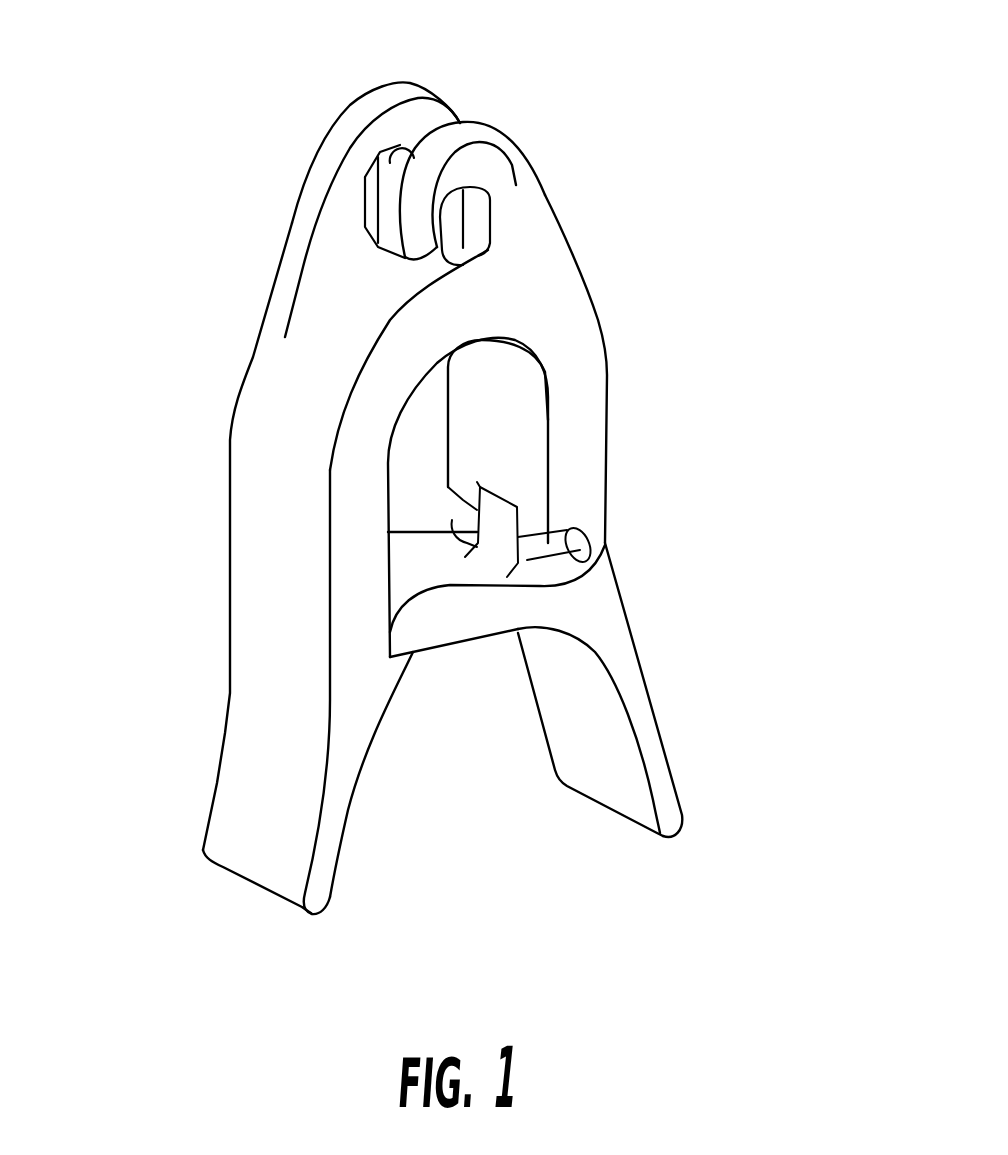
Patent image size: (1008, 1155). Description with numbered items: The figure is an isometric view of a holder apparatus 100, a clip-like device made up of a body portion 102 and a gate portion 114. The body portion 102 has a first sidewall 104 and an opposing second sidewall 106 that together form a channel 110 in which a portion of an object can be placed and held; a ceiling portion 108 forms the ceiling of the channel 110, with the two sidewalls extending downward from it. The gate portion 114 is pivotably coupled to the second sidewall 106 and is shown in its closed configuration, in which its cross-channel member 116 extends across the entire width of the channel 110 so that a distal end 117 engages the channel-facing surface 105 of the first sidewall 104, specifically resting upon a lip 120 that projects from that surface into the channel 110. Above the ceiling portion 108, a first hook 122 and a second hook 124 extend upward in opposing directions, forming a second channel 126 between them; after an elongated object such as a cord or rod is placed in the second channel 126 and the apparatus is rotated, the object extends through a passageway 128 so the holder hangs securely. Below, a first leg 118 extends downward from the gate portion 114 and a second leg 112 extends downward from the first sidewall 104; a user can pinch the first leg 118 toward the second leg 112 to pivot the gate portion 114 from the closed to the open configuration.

The holder apparatus 100 is at (192, 100).
The body portion 102 is at (267, 413).
The first sidewall 104 is at (273, 507).
The channel-facing surface 105 is at (398, 501).
The second sidewall 106 is at (570, 413).
The ceiling portion 108 is at (470, 310).
The channel 110 is at (430, 420).
The second leg 112 is at (273, 803).
The gate portion 114 is at (600, 623).
The cross-channel member 116 is at (469, 605).
The distal end 117 is at (410, 637).
The first leg 118 is at (673, 830).
The lip 120 is at (420, 658).
The first hook 122 is at (352, 113).
The second hook 124 is at (460, 123).
The second channel 126 is at (378, 191).
The passageway 128 is at (457, 222).